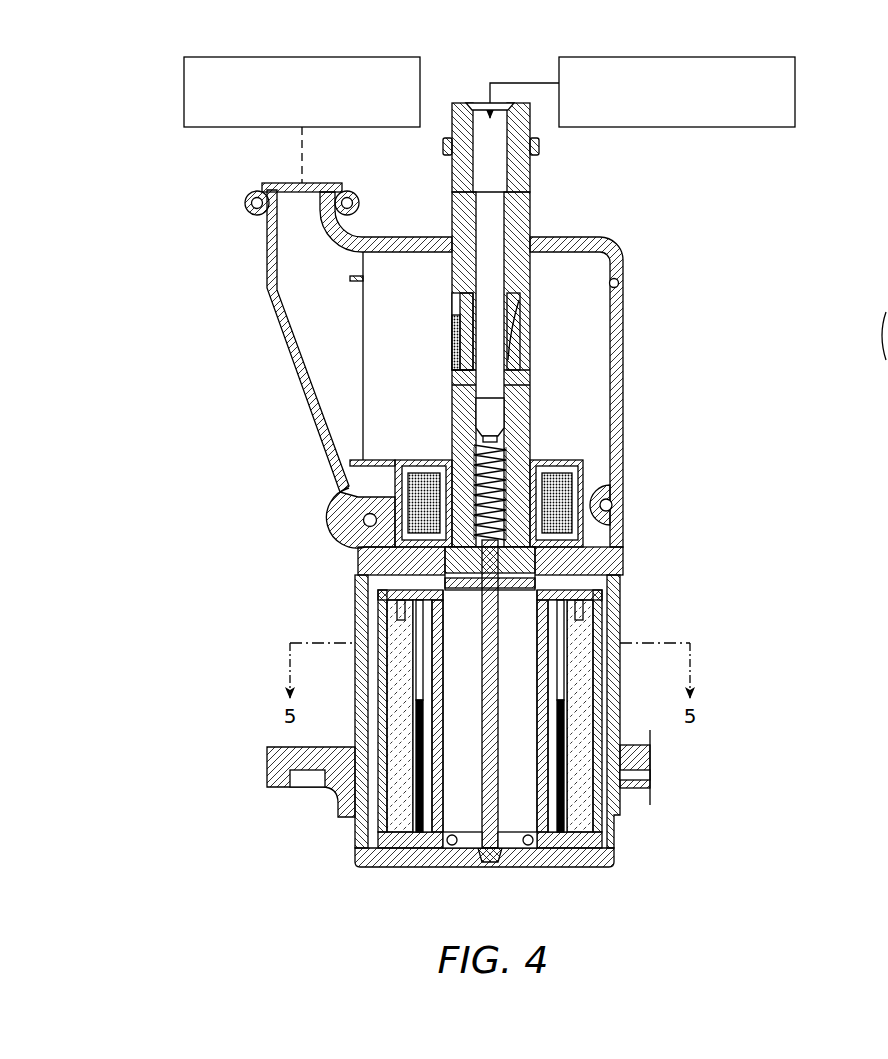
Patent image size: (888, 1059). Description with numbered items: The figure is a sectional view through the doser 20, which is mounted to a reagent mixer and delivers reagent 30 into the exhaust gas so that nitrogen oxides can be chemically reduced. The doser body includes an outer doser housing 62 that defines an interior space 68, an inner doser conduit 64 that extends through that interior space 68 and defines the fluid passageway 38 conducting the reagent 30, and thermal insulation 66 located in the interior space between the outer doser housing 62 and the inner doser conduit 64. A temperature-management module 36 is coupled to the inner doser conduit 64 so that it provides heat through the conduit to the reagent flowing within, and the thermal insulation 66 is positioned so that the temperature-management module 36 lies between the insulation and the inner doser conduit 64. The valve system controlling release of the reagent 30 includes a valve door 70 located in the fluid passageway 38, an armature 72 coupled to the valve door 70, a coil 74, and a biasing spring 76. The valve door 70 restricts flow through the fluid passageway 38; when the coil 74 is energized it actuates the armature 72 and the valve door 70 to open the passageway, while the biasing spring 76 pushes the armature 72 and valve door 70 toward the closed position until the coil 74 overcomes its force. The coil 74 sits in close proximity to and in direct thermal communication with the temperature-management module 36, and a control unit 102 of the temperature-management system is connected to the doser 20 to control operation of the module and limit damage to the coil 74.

The control unit 102 is at (184, 97).
The reagent 30 is at (797, 100).
The doser 20 is at (650, 197).
The outer doser housing 62 is at (624, 340).
The biasing spring 76 is at (509, 442).
The coil 74 is at (573, 485).
The fluid passageway 38 is at (521, 611).
The interior space 68 is at (604, 598).
The thermal insulation 66 is at (584, 641).
The temperature-management module 36 is at (562, 712).
The inner doser conduit 64 is at (540, 808).
The armature 72 is at (487, 810).
The valve door 70 is at (506, 847).